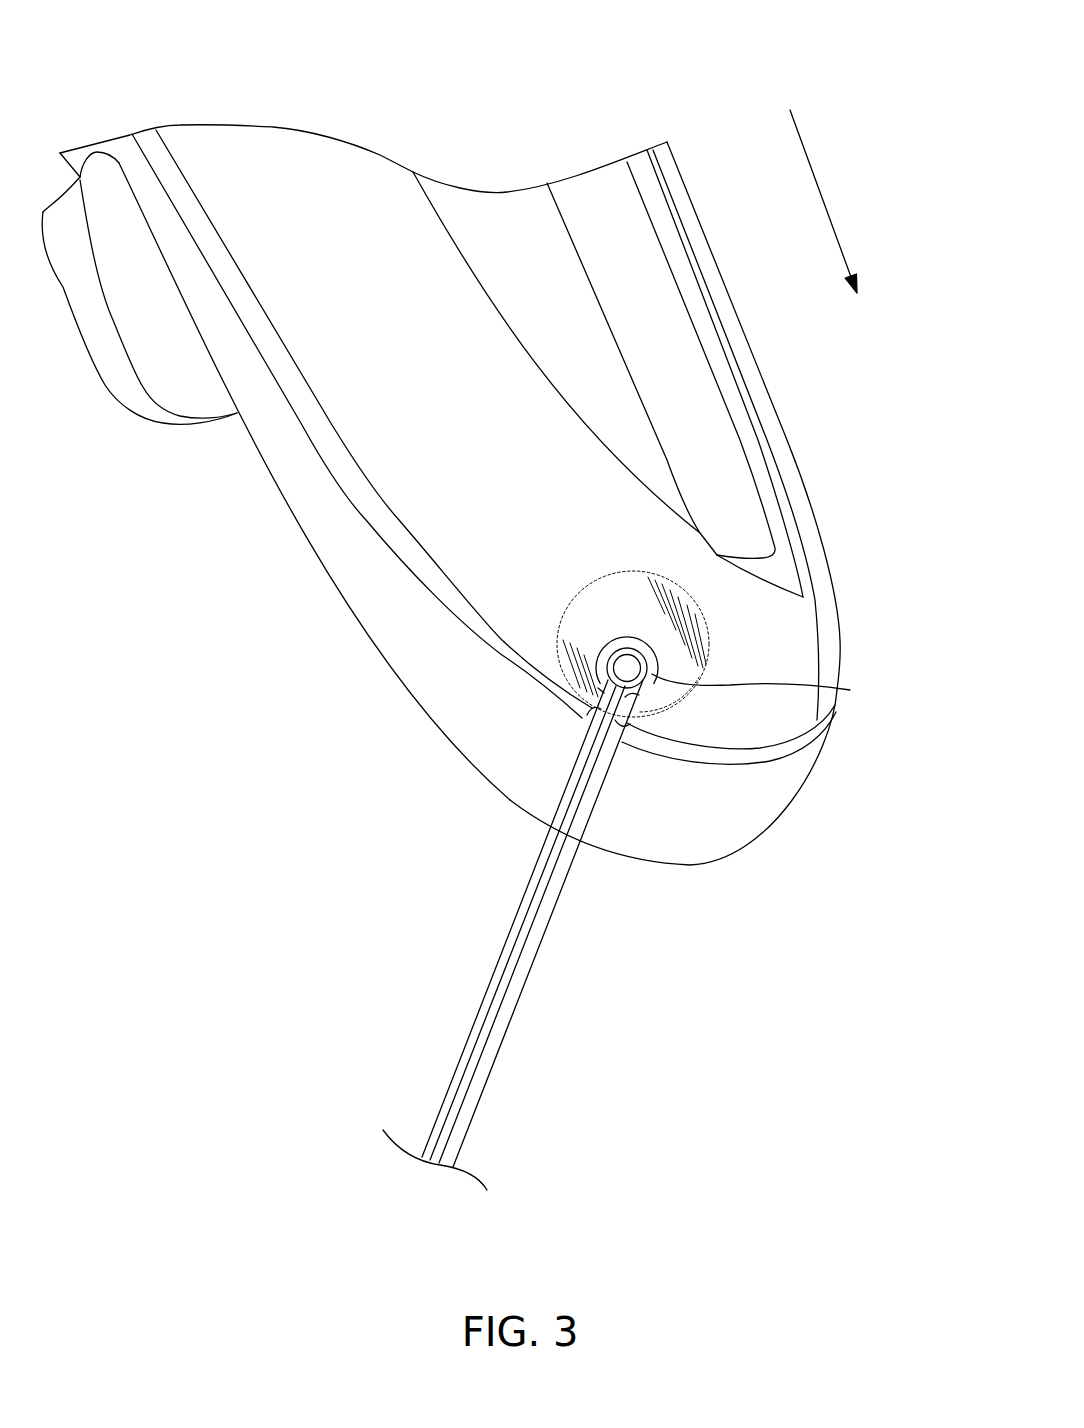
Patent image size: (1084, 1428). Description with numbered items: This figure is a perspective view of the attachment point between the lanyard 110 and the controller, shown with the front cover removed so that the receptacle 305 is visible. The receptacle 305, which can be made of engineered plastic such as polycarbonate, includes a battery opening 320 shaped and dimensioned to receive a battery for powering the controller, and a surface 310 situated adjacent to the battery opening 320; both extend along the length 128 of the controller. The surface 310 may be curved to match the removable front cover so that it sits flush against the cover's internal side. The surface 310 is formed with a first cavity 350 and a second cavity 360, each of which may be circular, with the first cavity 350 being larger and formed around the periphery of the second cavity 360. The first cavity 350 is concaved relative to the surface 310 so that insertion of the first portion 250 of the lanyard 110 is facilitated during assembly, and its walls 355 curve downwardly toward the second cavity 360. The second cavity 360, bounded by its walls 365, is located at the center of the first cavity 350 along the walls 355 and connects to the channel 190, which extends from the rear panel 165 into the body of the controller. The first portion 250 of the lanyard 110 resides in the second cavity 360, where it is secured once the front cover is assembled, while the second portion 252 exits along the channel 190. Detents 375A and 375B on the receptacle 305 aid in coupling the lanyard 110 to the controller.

The lanyard 110 is at (458, 935).
The length of the controller 128 is at (827, 197).
The rear panel 165 is at (337, 583).
The channel 190 is at (592, 735).
The first portion of the lanyard 250 is at (633, 667).
The second portion of the lanyard 252 is at (455, 1125).
The receptacle 305 is at (473, 537).
The surface 310 is at (439, 434).
The battery opening 320 is at (533, 217).
The first cavity 350 is at (774, 668).
The walls of the first cavity 355 is at (623, 610).
The second cavity 360 is at (850, 690).
The walls of the second cavity 365 is at (614, 718).
The detent 375A is at (577, 723).
The detent 375B is at (620, 737).